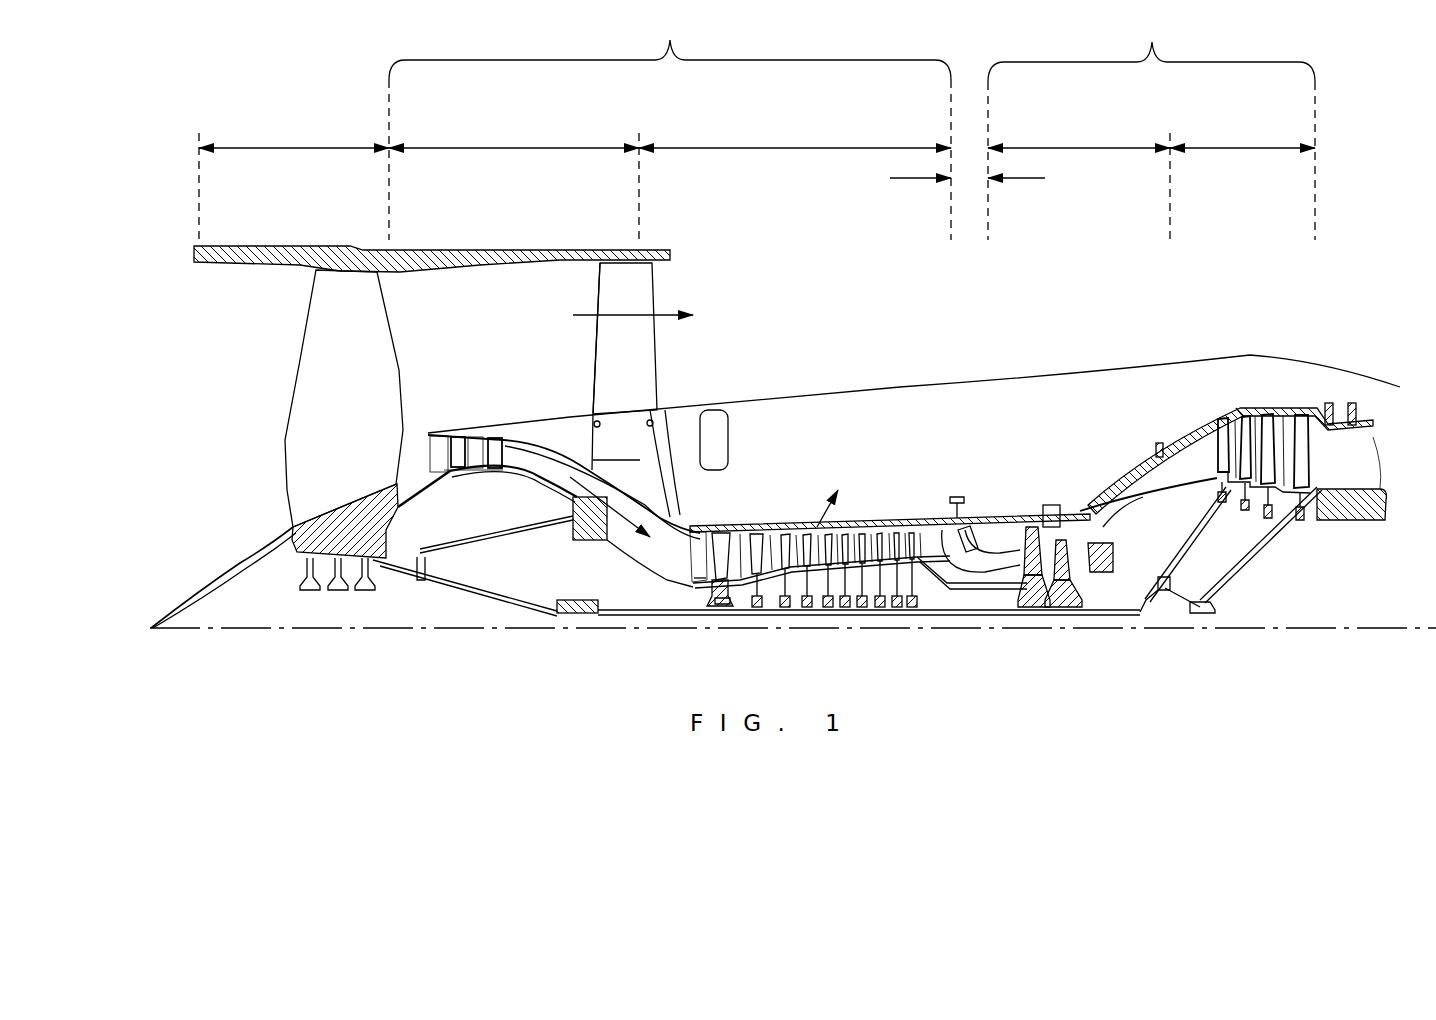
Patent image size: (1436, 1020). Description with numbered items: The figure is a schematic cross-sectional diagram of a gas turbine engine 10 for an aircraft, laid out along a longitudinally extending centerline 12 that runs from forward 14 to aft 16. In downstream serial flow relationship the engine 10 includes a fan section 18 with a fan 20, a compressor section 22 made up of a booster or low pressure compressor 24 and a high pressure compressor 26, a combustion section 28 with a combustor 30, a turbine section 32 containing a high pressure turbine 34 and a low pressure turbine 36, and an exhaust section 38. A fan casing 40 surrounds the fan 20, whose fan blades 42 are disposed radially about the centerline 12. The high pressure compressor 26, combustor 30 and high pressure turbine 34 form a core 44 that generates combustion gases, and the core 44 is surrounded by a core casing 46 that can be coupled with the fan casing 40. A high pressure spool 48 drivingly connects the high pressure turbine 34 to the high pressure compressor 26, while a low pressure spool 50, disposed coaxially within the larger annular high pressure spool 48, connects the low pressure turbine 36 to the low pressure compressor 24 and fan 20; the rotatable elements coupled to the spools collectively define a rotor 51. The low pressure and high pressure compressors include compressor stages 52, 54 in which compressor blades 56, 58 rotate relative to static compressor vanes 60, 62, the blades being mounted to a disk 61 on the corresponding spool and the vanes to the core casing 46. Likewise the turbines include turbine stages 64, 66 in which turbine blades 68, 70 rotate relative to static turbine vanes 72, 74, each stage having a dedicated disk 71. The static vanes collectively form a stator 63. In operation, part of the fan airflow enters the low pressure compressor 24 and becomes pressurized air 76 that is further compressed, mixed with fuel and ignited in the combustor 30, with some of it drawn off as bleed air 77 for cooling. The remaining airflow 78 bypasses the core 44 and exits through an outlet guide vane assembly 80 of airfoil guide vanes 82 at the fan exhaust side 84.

The gas turbine engine 10 is at (1330, 175).
The centerline 12 is at (273, 630).
The forward 14 is at (227, 374).
The aft 16 is at (1384, 460).
The fan section 18 is at (293, 148).
The fan 20 is at (273, 486).
The compressor section 22 is at (670, 40).
The low pressure compressor 24 is at (523, 148).
The high pressure compressor 26 is at (795, 148).
The combustion section 28 is at (902, 180).
The combustor 30 is at (990, 497).
The turbine section 32 is at (1152, 42).
The high pressure turbine 34 is at (1080, 148).
The low pressure turbine 36 is at (1240, 148).
The exhaust section 38 is at (1375, 437).
The fan casing 40 is at (423, 246).
The fan blades 42 is at (360, 310).
The core 44 is at (913, 417).
The core casing 46 is at (1157, 447).
The high pressure spool 48 is at (945, 582).
The low pressure spool 50 is at (575, 610).
The rotor 51 is at (820, 617).
The compressor stages 52 is at (552, 436).
The compressor stages 54 is at (890, 516).
The compressor blades 56 is at (460, 432).
The compressor blades 58 is at (717, 537).
The static compressor vanes 60 is at (445, 432).
The disk 61 is at (450, 469).
The static compressor vanes 62 is at (698, 540).
The stator 63 is at (1225, 413).
The turbine stages 64 is at (1037, 499).
The turbine stages 66 is at (1282, 409).
The turbine blades 68 is at (1045, 510).
The turbine blades 70 is at (1302, 415).
The disk 71 is at (1220, 487).
The static turbine vanes 72 is at (1028, 510).
The static turbine vanes 74 is at (1287, 415).
The pressurized air 76 is at (613, 538).
The bleed air 77 is at (812, 495).
The airflow 78 is at (587, 318).
The outlet guide vane assembly 80 is at (665, 373).
The airfoil guide vanes 82 is at (603, 350).
The fan exhaust side 84 is at (670, 295).